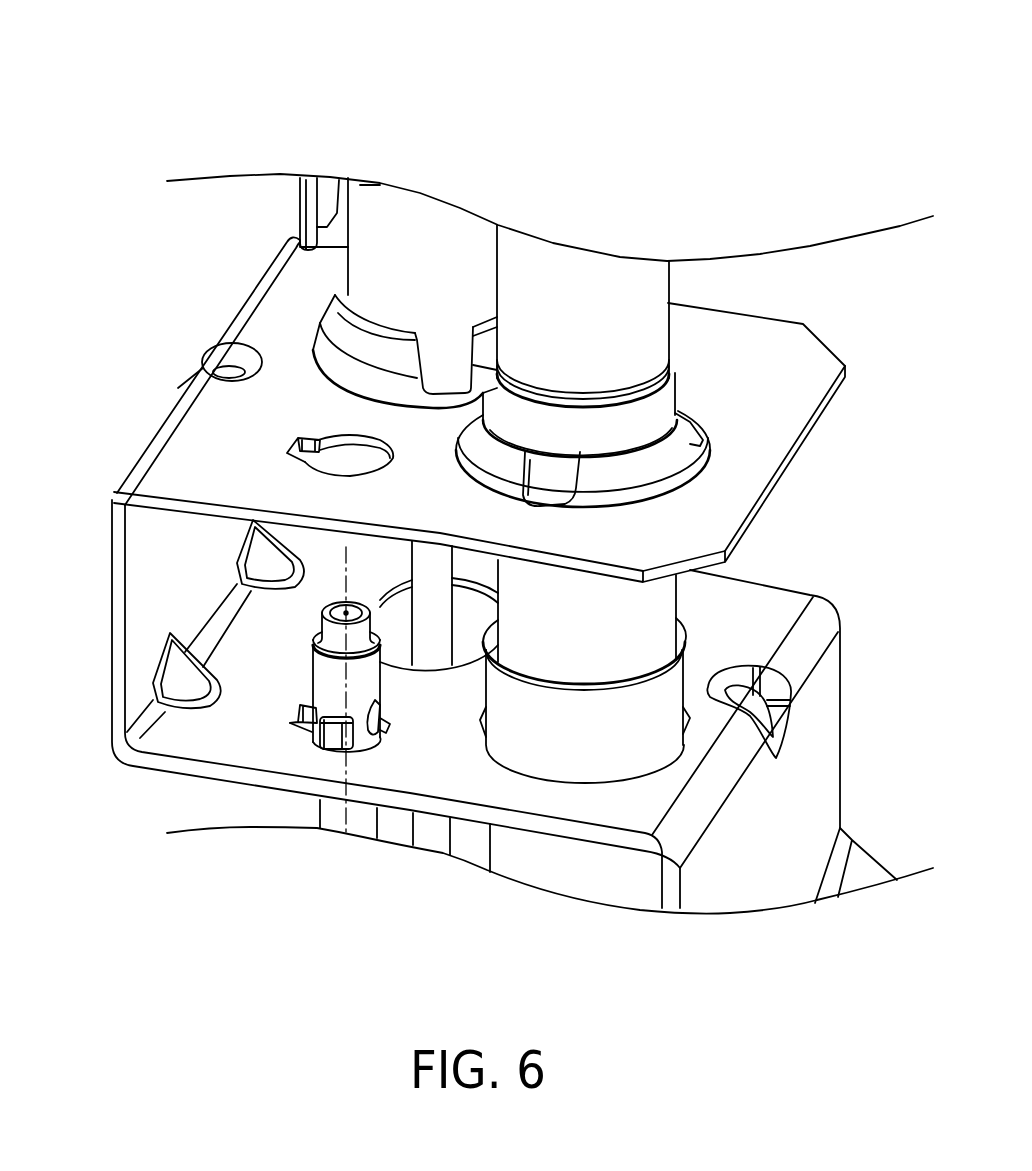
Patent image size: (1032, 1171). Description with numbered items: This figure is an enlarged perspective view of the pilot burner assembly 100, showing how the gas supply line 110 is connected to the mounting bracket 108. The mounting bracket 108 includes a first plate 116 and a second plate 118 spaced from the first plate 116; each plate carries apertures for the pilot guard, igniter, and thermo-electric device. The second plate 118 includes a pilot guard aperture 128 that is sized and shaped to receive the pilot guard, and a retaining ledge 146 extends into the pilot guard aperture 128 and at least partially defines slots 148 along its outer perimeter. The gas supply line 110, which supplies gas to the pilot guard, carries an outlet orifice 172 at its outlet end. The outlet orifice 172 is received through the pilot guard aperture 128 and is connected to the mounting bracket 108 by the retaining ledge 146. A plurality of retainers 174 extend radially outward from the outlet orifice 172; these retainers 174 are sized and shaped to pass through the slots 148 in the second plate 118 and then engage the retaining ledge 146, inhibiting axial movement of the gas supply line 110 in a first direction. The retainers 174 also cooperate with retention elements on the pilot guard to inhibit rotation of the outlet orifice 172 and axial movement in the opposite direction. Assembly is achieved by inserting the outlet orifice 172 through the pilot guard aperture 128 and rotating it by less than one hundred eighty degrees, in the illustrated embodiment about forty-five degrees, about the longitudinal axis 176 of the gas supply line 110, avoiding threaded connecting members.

The pilot burner assembly 100 is at (199, 104).
The mounting bracket 108 is at (100, 611).
The gas supply line 110 is at (319, 828).
The first plate 116 is at (757, 350).
The second plate 118 is at (754, 618).
The pilot guard aperture 128 is at (300, 726).
The retaining ledge 146 is at (314, 748).
The slots 148 is at (310, 738).
The outlet orifice 172 is at (303, 670).
The retainers 174 is at (333, 745).
The longitudinal axis 176 is at (347, 547).